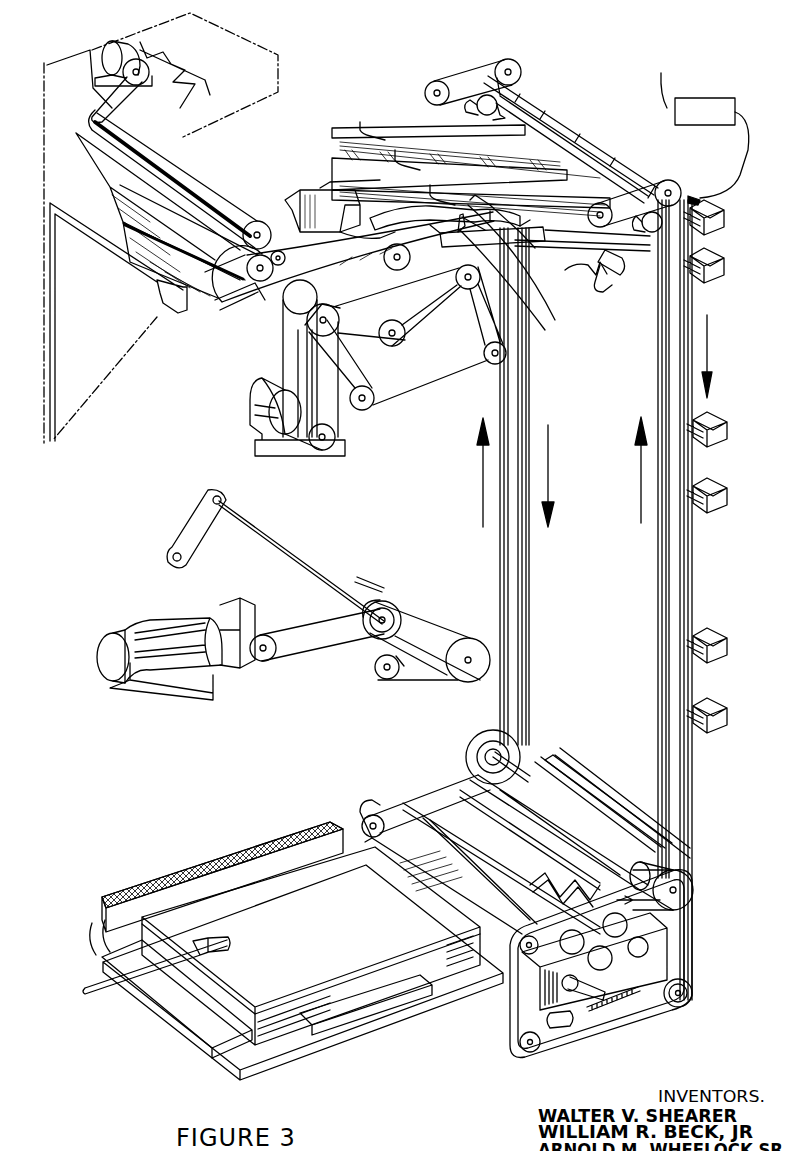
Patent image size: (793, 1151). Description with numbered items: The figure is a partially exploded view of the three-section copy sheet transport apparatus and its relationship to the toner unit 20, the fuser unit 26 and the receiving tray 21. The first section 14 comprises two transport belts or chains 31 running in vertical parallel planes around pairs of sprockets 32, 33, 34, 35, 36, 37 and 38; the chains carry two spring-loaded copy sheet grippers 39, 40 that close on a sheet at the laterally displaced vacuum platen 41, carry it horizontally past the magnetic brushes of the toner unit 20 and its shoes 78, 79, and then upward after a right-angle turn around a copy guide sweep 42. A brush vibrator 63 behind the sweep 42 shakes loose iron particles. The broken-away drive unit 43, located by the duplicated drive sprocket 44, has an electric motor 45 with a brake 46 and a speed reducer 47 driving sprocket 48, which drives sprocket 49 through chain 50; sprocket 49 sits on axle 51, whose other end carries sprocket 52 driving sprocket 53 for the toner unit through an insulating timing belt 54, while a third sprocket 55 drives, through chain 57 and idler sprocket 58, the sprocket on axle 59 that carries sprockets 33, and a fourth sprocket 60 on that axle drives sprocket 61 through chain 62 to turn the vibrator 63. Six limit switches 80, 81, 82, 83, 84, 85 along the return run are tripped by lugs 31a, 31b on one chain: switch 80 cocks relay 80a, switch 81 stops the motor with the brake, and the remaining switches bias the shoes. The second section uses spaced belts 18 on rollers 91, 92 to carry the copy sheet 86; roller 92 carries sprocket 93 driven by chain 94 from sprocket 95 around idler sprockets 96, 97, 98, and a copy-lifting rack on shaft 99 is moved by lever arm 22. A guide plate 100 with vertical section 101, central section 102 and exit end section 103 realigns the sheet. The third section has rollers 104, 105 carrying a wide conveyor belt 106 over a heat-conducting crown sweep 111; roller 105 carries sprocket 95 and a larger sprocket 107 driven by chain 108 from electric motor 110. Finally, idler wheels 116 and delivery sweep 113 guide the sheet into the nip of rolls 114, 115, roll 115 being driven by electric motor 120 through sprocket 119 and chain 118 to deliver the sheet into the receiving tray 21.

The first section of the transport apparatus 14 is at (360, 120).
The belts 18 is at (440, 148).
The toner unit 20 is at (712, 946).
The receiving tray 21 is at (285, 112).
The lever arm 22 is at (622, 284).
The fuser unit 26 is at (305, 172).
The transport belts or chains 31 is at (528, 563).
The lug 31a is at (615, 955).
The lug 31b is at (700, 196).
The pulleys or sprockets 32 is at (355, 820).
The driven sprockets 33 is at (470, 745).
The sprockets 34 is at (482, 95).
The sprockets 35 is at (428, 80).
The sprockets 36 is at (518, 60).
The sprockets 37 is at (692, 993).
The sprockets 38 is at (530, 1055).
The copy sheet gripper 39 is at (370, 812).
The copy sheet gripper 40 is at (550, 120).
The vacuum platen 41 is at (312, 930).
The copy guide sweep 42 is at (575, 805).
The drive unit 43 is at (148, 548).
The drive sprocket 44 is at (475, 677).
The electric motor 45 is at (172, 618).
The electrically activated brake 46 is at (105, 652).
The speed reducer 47 is at (250, 600).
The sprocket 48 is at (290, 636).
The sprocket 49 is at (392, 603).
The chain 50 is at (300, 660).
The axle 51 is at (278, 540).
The sprocket 52 is at (224, 497).
The sprocket 53 is at (183, 556).
The electrically insulating timing belt 54 is at (188, 528).
The sprocket 55 is at (372, 630).
The chain 57 is at (432, 618).
The idler sprocket 58 is at (390, 680).
The axle 59 is at (365, 580).
The sprocket 60 is at (498, 748).
The sprocket 61 is at (540, 768).
The chain 62 is at (520, 760).
The vibrator 63 is at (608, 825).
The shoe 78 is at (433, 805).
The shoe 79 is at (460, 790).
The limit switch 80 is at (724, 220).
The relay 80a is at (705, 108).
The limit switch 81 is at (724, 268).
The limit switch 82 is at (727, 436).
The limit switch 83 is at (727, 500).
The limit switch 84 is at (727, 650).
The limit switch 85 is at (727, 721).
The copy sheet 86 is at (460, 893).
The roller 91 is at (590, 296).
The roller 92 is at (425, 262).
The sprocket 93 is at (467, 290).
The chain 94 is at (420, 388).
The sprocket 95 is at (334, 330).
The idler sprocket 96 is at (484, 352).
The idler sprocket 97 is at (395, 346).
The idler sprocket 98 is at (370, 410).
The shaft 99 is at (566, 250).
The copy sheet guide plate 100 is at (485, 235).
The vertical section 101 is at (530, 240).
The central section 102 is at (490, 280).
The exit end section 103 is at (433, 215).
The roller 104 is at (396, 270).
The roller 105 is at (287, 313).
The wide conveyor belt 106 is at (330, 250).
The sprocket 107 is at (305, 330).
The chain 108 is at (255, 383).
The electric motor 110 is at (305, 450).
The crown sweep 111 is at (273, 297).
The delivery sweep 113 is at (158, 205).
The roll 114 is at (255, 280).
The roll 115 is at (165, 155).
The idler wheel 116 is at (276, 250).
The chain 118 is at (128, 98).
The sprocket 119 is at (145, 64).
The electric motor 120 is at (122, 45).